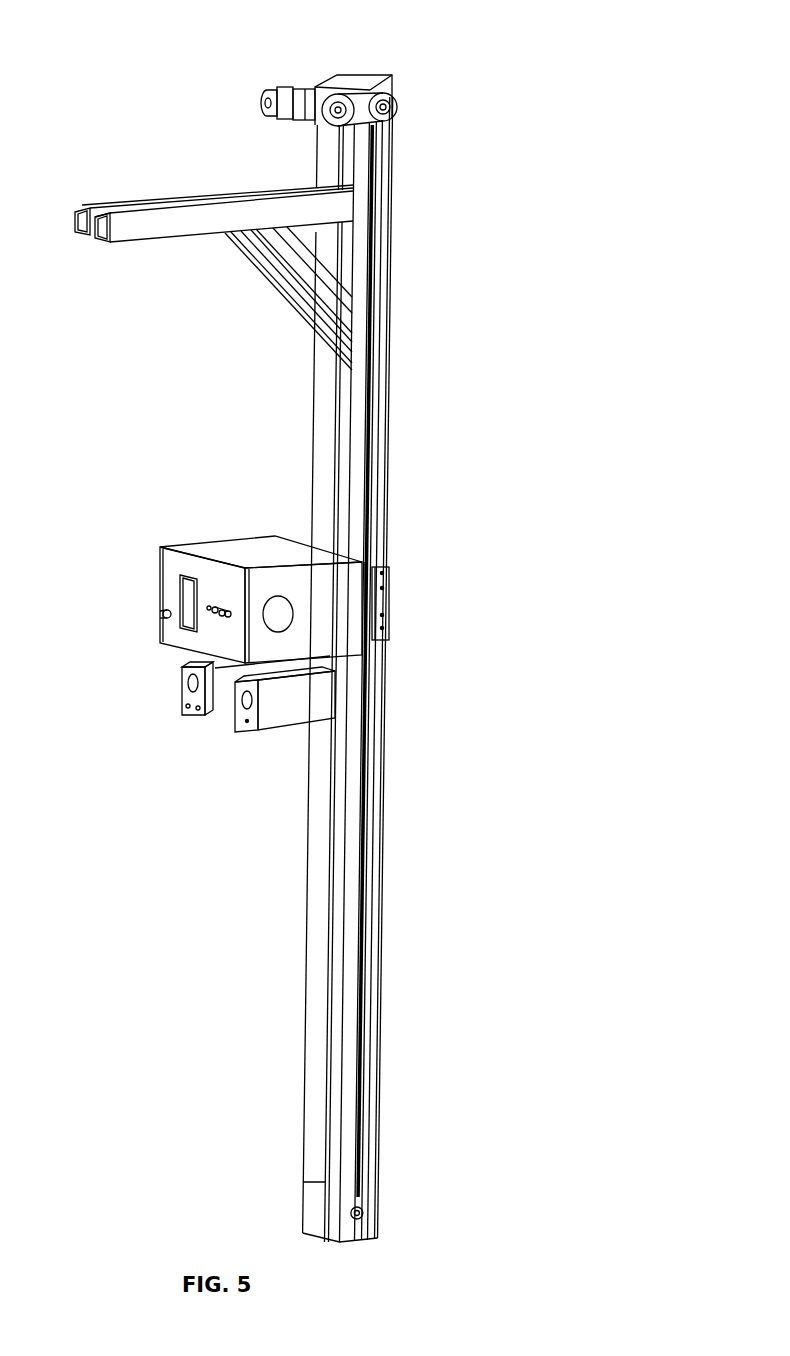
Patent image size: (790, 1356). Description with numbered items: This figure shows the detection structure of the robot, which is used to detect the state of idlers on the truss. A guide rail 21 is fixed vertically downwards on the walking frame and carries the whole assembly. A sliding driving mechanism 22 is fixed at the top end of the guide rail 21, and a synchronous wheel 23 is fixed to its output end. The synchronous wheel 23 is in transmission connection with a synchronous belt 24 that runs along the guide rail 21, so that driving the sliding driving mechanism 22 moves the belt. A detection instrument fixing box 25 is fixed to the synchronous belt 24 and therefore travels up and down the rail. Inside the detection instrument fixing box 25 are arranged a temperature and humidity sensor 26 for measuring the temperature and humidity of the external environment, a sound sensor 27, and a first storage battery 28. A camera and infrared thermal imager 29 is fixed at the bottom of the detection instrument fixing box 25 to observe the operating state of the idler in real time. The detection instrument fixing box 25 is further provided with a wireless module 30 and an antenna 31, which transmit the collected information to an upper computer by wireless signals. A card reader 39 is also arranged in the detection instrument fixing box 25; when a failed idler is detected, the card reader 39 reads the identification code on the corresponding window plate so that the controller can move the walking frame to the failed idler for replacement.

The guide rail 21 is at (275, 669).
The sliding driving mechanism 22 is at (256, 68).
The synchronous wheel 23 is at (343, 71).
The synchronous belt 24 is at (405, 683).
The detection instrument fixing box 25 is at (405, 597).
The temperature and humidity sensor 26 is at (152, 508).
The sound sensor 27 is at (215, 515).
The first storage battery 28 is at (192, 704).
The camera and infrared thermal imager 29 is at (211, 766).
The wireless module 30 is at (112, 636).
The antenna 31 is at (209, 596).
The card reader 39 is at (125, 642).